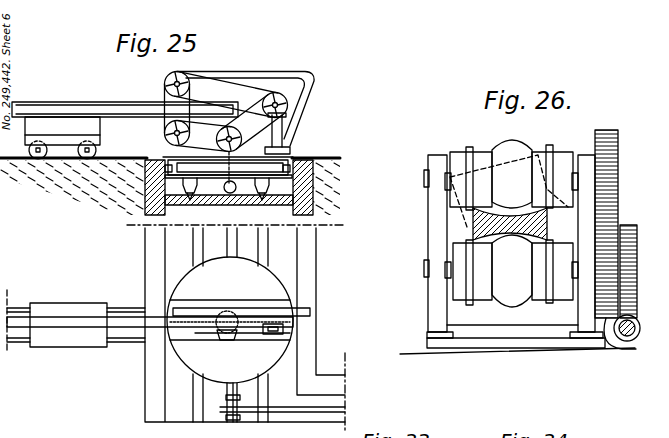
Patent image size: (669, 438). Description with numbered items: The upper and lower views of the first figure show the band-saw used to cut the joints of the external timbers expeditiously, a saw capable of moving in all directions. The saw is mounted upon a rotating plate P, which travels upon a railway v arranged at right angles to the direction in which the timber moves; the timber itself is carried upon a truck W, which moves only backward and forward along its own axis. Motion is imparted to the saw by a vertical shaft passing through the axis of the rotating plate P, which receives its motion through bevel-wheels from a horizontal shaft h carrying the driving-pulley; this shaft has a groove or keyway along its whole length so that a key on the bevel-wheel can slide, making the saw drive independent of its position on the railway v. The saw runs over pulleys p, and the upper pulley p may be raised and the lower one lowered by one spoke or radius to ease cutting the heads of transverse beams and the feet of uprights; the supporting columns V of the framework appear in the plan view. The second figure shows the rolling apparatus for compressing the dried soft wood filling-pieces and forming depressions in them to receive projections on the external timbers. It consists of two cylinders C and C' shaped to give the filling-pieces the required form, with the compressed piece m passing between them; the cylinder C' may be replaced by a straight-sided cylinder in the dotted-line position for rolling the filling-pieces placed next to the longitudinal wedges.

In FIG. 25, the pulley p is at (167, 109).
In FIG. 25, the truck W is at (150, 227).
In FIG. 25, the railway v is at (228, 166).
In FIG. 25, the rotating plate P is at (237, 268).
In FIG. 25, the frame columns V is at (229, 325).
In FIG. 25, the horizontal shaft h is at (228, 402).
In FIG. 26, the cylinder C' is at (511, 183).
In FIG. 26, the cylinder C is at (513, 271).
In FIG. 26, the material between rolls m is at (510, 224).